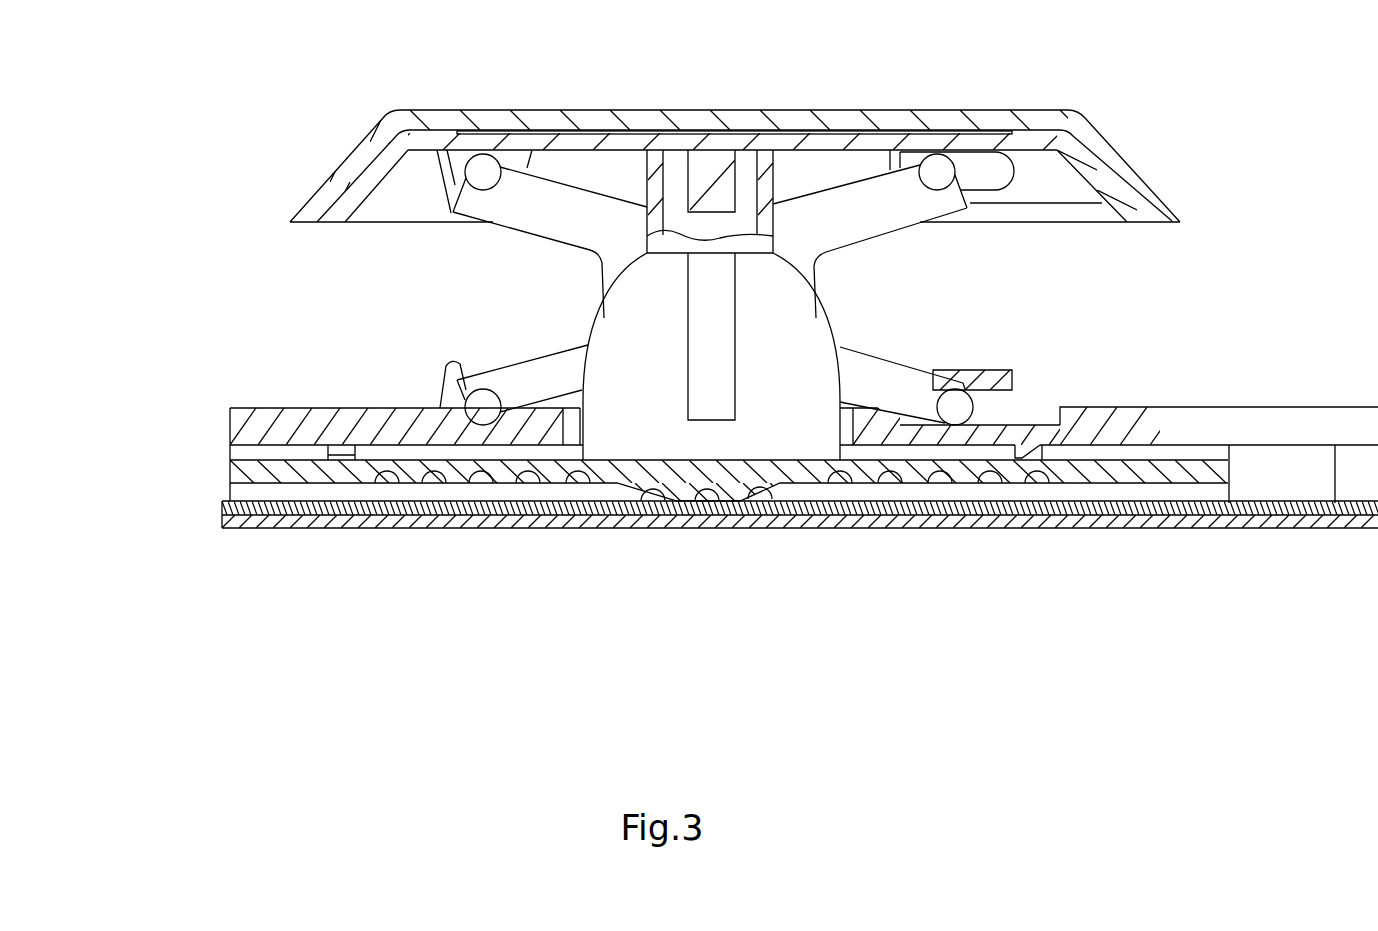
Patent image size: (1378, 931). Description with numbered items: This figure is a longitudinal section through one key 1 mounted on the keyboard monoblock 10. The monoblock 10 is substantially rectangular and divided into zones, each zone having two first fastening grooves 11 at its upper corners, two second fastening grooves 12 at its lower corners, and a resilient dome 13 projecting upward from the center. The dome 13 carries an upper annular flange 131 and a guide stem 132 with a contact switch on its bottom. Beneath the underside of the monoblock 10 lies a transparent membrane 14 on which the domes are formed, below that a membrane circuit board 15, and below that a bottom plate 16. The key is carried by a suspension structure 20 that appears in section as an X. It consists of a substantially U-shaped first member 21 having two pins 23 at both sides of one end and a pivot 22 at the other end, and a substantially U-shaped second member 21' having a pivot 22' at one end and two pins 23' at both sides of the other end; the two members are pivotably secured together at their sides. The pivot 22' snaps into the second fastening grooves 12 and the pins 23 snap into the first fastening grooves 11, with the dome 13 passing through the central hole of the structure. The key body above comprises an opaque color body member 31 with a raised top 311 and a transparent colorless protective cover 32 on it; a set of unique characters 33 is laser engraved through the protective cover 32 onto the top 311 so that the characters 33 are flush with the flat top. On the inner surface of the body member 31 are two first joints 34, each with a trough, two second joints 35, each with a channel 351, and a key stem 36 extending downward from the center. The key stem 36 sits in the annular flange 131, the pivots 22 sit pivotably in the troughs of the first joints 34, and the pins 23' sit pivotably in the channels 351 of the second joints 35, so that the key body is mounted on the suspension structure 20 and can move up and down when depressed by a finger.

The key 1 is at (200, 168).
The monoblock 10 is at (257, 423).
The first fastening groove 11 is at (1003, 408).
The second fastening groove 12 is at (487, 367).
The resilient dome 13 is at (655, 355).
The annular flange 131 is at (777, 184).
The guide stem 132 is at (720, 392).
The transparent membrane 14 is at (560, 480).
The membrane circuit board 15 is at (397, 517).
The bottom plate 16 is at (332, 518).
The suspension structure 20 is at (975, 272).
The first member 21 is at (904, 364).
The second member 21' is at (873, 241).
The pivot 22 is at (545, 181).
The pivot 22' is at (522, 488).
The pin 23 is at (954, 508).
The pin 23' is at (924, 120).
The body member 31 is at (858, 147).
The raised top 311 is at (695, 128).
The protective cover 32 is at (604, 122).
The character 33 is at (540, 122).
The first joint 34 is at (450, 163).
The second joint 35 is at (1045, 167).
The channel 351 is at (975, 165).
The key stem 36 is at (720, 166).